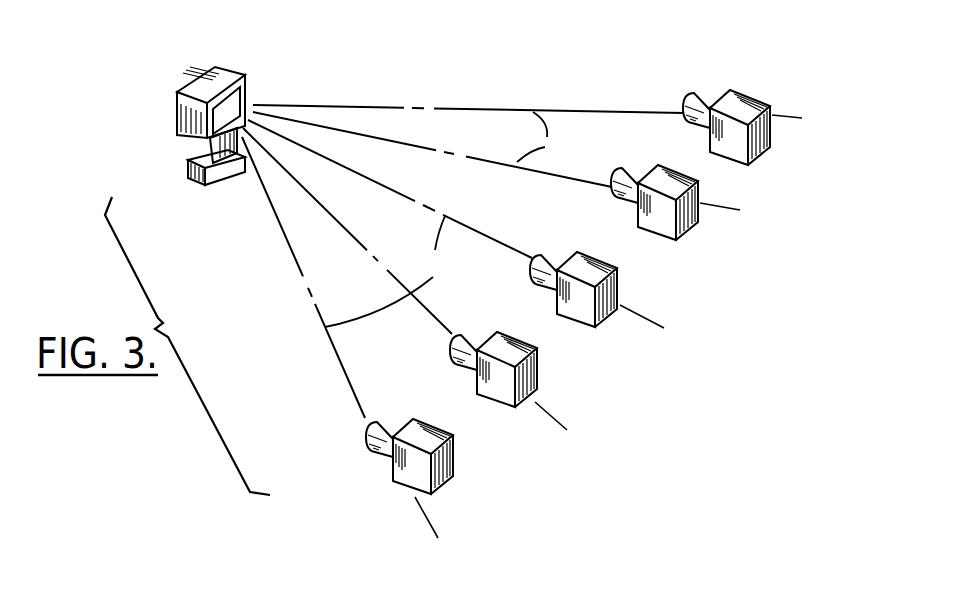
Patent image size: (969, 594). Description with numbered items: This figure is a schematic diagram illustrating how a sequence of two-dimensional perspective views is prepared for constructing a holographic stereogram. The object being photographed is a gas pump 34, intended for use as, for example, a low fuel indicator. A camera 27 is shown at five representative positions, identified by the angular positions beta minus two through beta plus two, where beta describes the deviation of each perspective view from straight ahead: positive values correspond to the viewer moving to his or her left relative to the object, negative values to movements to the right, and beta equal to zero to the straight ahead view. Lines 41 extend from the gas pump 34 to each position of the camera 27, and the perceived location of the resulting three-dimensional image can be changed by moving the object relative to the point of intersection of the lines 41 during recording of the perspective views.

The gas pump 34 is at (243, 82).
The camera 27 is at (752, 100).
The lines 41 is at (392, 268).